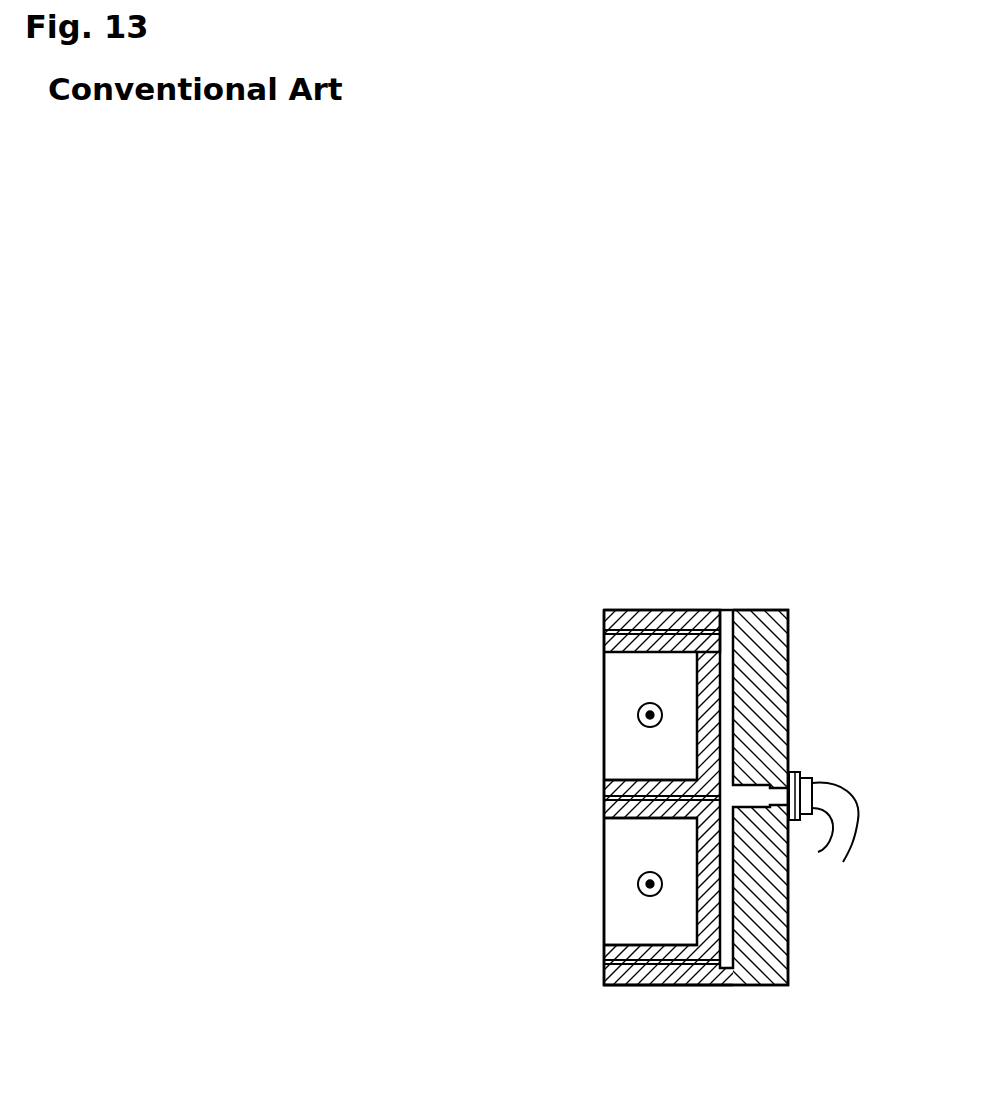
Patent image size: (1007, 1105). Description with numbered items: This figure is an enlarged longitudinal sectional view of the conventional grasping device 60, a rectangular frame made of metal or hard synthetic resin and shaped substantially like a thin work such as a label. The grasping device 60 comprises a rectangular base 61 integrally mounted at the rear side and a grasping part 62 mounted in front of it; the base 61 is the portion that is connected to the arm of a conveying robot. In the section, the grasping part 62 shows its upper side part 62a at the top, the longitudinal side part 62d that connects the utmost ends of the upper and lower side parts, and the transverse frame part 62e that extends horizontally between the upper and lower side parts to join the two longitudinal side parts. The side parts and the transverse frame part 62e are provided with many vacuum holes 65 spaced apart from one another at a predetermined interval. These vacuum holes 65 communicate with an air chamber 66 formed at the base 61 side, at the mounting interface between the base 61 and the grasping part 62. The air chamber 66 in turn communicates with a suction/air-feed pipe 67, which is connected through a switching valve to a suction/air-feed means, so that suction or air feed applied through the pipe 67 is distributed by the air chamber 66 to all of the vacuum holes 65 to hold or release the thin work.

The grasping device 60 is at (782, 590).
The rectangular base 61 is at (775, 987).
The grasping part 62 is at (695, 987).
The upper side part 62a is at (637, 610).
The longitudinal side part 62d is at (615, 987).
The transverse frame part 62e is at (603, 806).
The vacuum holes 65 is at (603, 632).
The air chamber 66 is at (750, 610).
The suction/air-feed pipe 67 is at (845, 798).